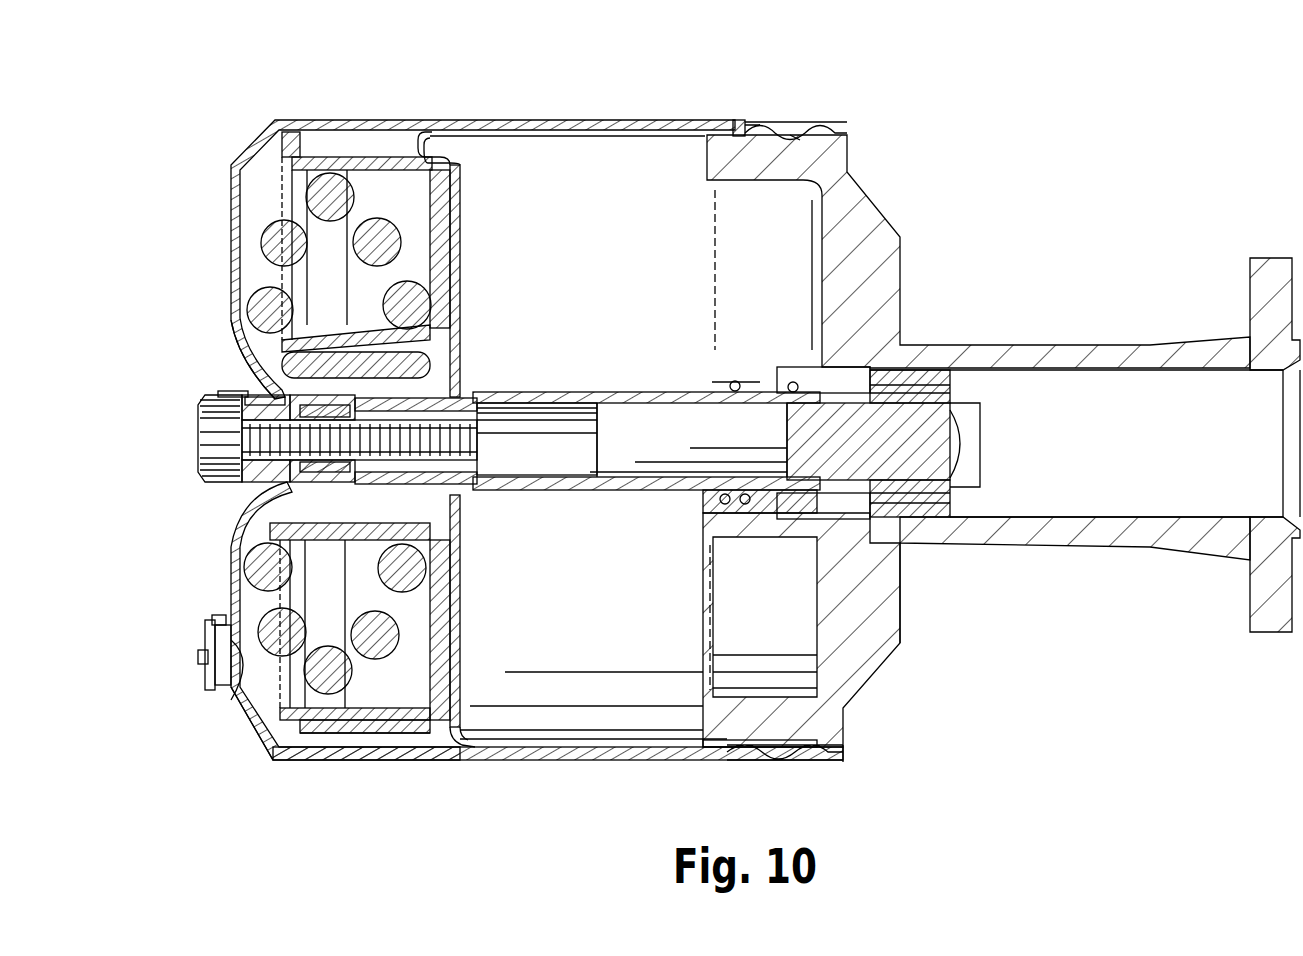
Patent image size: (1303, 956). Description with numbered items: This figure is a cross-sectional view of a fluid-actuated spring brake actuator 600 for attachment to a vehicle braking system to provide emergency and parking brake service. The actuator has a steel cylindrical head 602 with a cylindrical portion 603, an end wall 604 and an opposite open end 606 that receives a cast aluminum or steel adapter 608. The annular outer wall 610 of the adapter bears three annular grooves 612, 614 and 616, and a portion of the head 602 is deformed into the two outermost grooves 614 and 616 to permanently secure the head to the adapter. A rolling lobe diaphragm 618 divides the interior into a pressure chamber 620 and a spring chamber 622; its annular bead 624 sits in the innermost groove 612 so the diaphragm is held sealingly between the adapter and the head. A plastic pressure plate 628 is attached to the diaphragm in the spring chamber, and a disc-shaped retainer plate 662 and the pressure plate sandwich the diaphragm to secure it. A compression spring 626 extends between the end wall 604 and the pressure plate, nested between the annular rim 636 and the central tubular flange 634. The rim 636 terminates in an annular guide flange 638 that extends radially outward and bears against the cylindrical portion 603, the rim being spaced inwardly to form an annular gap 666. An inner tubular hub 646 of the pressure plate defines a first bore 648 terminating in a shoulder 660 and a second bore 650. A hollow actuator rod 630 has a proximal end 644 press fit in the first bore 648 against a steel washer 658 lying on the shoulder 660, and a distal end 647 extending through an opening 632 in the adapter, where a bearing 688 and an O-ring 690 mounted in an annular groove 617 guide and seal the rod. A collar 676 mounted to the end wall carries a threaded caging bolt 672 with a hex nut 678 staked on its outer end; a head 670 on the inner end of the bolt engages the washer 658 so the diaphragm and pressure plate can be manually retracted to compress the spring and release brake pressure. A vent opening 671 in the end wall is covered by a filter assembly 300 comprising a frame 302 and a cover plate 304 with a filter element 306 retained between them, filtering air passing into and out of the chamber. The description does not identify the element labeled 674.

The filter assembly 300 is at (188, 657).
The frame 302 is at (212, 655).
The cover plate 304 is at (213, 625).
The filter element 306 is at (210, 677).
The spring brake actuator 600 is at (1045, 740).
The cylindrical head 602 is at (240, 768).
The cylindrical portion 603 is at (400, 760).
The end wall 604 is at (232, 550).
The open end 606 is at (848, 140).
The adapter 608 is at (885, 668).
The annular outer wall 610 is at (840, 760).
The annular groove 612 is at (772, 130).
The annular groove 614 is at (770, 740).
The annular groove 616 is at (818, 726).
The annular groove 617 is at (735, 380).
The rolling lobe diaphragm 618 is at (600, 740).
The pressure chamber 620 is at (578, 614).
The spring chamber 622 is at (360, 693).
The annular bead 624 is at (737, 128).
The compression spring 626 is at (320, 680).
The pressure plate 628 is at (297, 282).
The actuator rod 630 is at (652, 392).
The opening 632 is at (710, 496).
The central tubular flange 634 is at (328, 372).
The annular rim 636 is at (337, 157).
The annular guide flange 638 is at (270, 124).
The proximal end 644 is at (460, 505).
The inner tubular hub 646 is at (246, 388).
The distal end 647 is at (793, 382).
The first bore 648 is at (240, 437).
The second bore 650 is at (338, 379).
The steel washer 658 is at (355, 485).
The shoulder 660 is at (325, 484).
The retainer plate 662 is at (460, 655).
The annular gap 666 is at (375, 740).
The head 670 is at (545, 403).
The vent opening 671 is at (232, 692).
The caging bolt 672 is at (247, 396).
The sleeve 674 is at (470, 398).
The collar 676 is at (240, 396).
The hex nut 678 is at (215, 472).
The bearing 688 is at (725, 504).
The O-ring 690 is at (748, 504).